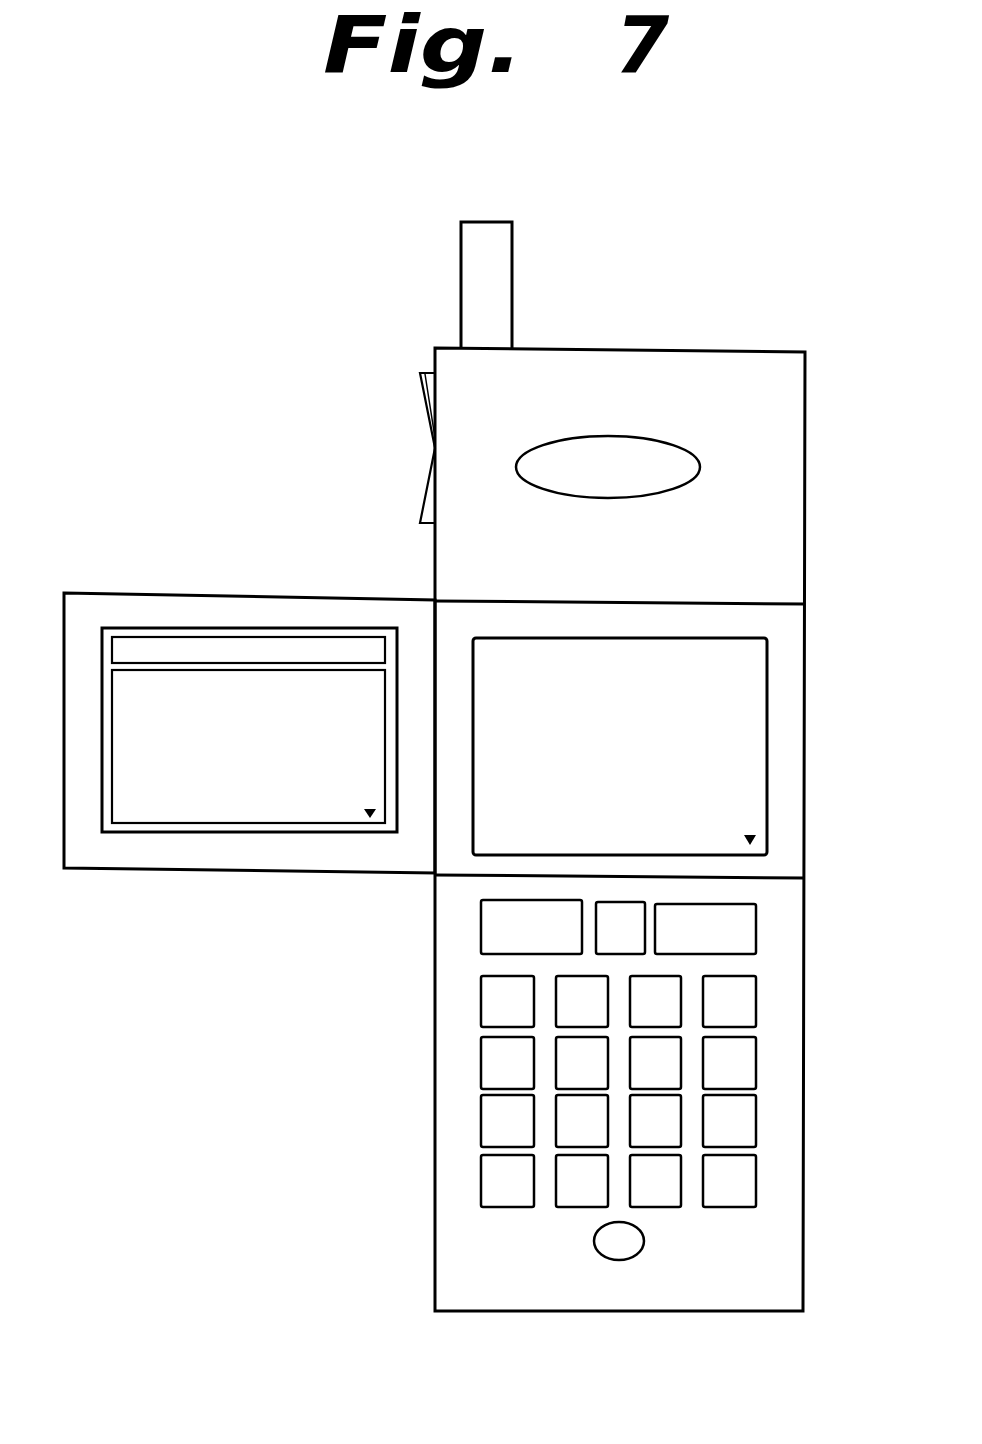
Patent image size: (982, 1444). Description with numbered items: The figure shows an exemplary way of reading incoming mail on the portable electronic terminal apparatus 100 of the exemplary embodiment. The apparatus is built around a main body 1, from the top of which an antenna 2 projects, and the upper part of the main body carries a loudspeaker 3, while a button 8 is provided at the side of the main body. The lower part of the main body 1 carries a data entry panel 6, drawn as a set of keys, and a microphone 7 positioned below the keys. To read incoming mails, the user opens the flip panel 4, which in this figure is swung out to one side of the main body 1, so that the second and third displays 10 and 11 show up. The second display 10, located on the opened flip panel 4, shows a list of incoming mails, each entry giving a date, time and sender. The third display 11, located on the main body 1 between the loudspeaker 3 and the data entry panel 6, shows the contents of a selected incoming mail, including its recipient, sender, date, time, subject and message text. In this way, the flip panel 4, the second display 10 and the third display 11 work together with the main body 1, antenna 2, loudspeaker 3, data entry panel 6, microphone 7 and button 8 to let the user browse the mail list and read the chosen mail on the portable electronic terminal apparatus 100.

The portable electronic terminal apparatus 100 is at (702, 283).
The main body 1 is at (805, 497).
The antenna 2 is at (505, 267).
The loudspeaker 3 is at (655, 455).
The flip panel 4 is at (222, 603).
The data entry panel 6 is at (761, 1058).
The microphone 7 is at (637, 1244).
The button 8 is at (423, 402).
The second display 10 is at (187, 835).
The third display 11 is at (760, 682).